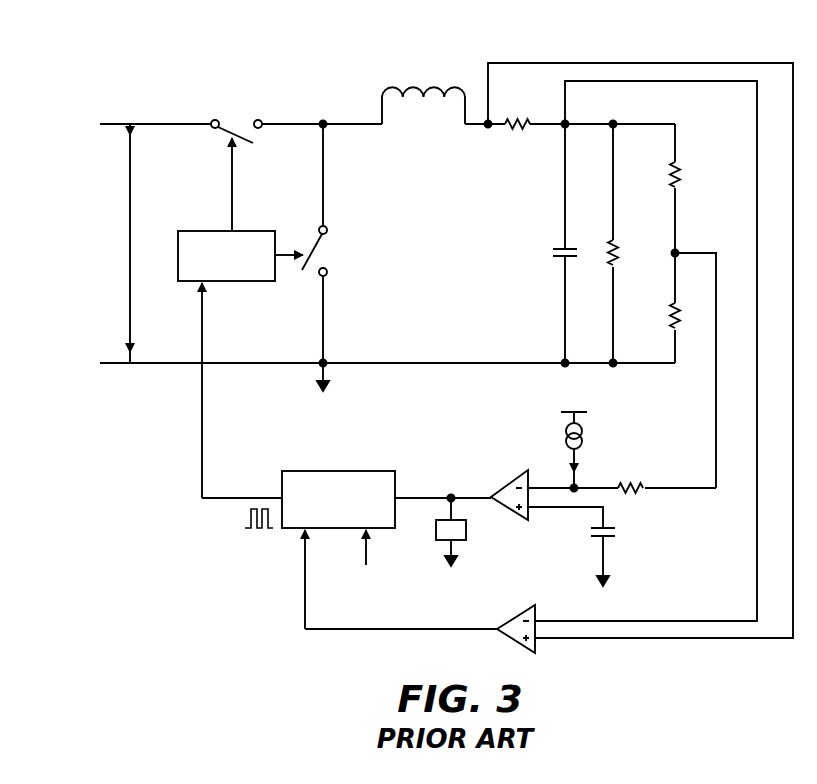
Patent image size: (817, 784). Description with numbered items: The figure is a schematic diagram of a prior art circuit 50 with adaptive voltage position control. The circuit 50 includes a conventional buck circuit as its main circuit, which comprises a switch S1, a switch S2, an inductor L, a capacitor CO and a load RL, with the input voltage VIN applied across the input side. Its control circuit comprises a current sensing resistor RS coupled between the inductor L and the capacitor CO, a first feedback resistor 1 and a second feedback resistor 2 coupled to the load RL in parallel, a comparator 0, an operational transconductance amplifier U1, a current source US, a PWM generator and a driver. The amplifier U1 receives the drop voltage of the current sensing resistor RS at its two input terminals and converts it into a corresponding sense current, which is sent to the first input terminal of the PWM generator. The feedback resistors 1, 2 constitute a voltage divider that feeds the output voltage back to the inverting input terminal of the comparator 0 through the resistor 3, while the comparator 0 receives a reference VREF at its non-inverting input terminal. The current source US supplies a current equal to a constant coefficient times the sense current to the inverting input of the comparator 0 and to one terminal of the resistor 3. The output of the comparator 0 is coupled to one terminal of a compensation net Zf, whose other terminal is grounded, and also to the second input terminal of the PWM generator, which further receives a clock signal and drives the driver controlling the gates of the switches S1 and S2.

The circuit 50 is at (163, 69).
The switch S1 is at (236, 118).
The switch S2 is at (328, 251).
The inductor L is at (423, 116).
The current sensing resistor RS is at (517, 138).
The capacitor CO is at (550, 254).
The load RL is at (625, 258).
The feedback resistor 1 is at (687, 177).
The feedback resistor 2 is at (687, 318).
The resistor 3 is at (642, 498).
The comparator 0 is at (508, 492).
The operational transconductance amplifier U1 is at (516, 624).
The current source US is at (583, 450).
The compensation net Zf is at (467, 534).
The reference VREF is at (622, 557).
The input voltage VIN is at (125, 243).